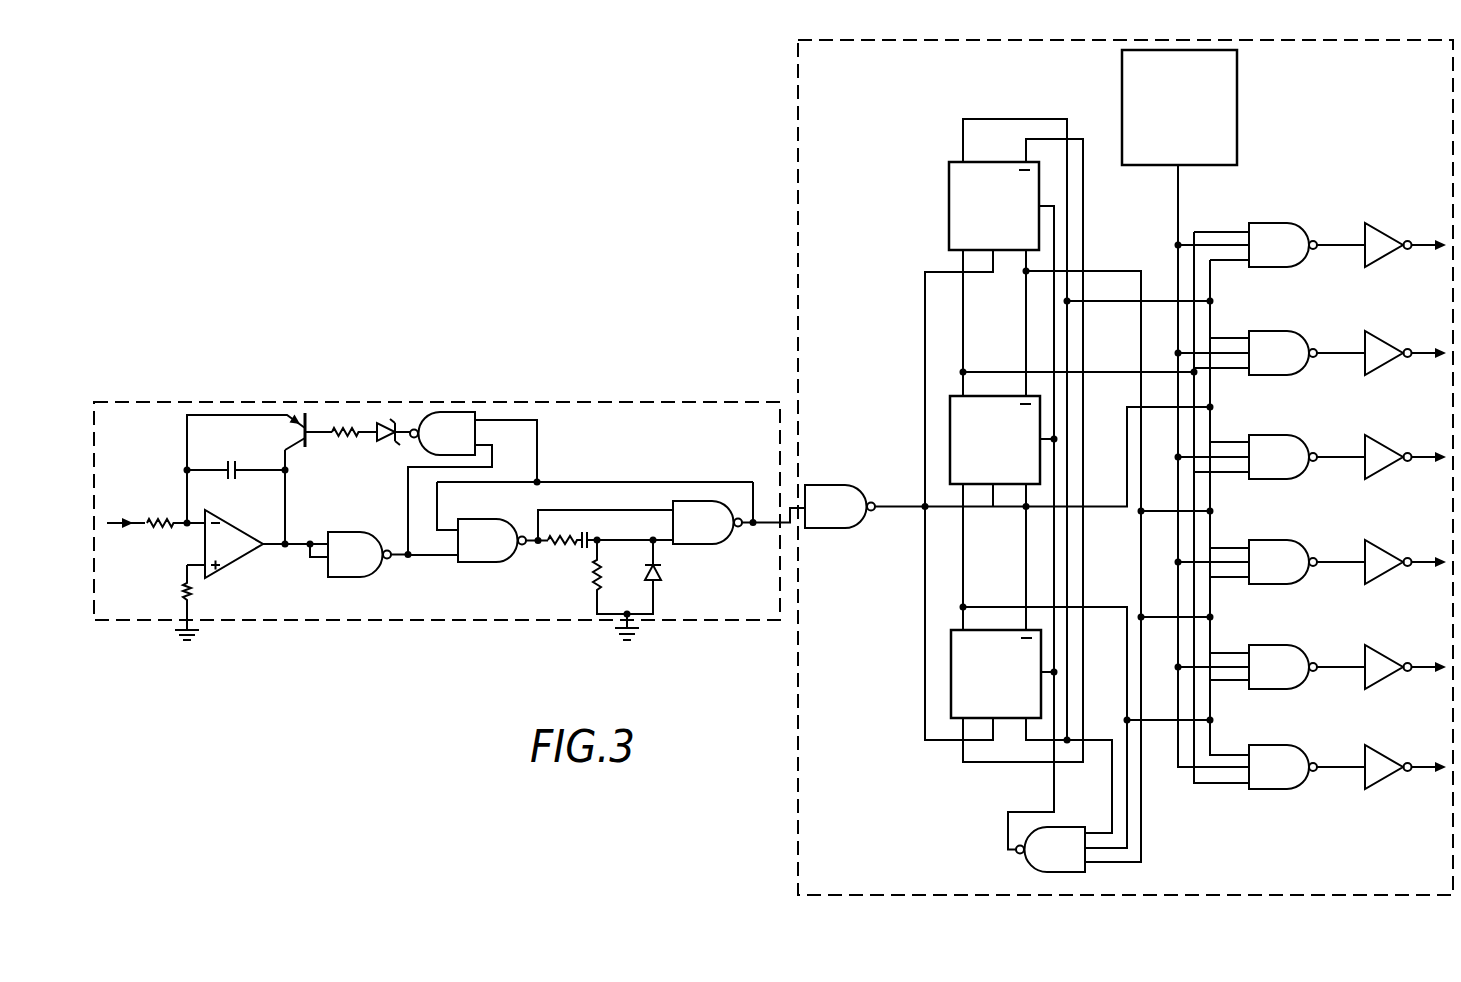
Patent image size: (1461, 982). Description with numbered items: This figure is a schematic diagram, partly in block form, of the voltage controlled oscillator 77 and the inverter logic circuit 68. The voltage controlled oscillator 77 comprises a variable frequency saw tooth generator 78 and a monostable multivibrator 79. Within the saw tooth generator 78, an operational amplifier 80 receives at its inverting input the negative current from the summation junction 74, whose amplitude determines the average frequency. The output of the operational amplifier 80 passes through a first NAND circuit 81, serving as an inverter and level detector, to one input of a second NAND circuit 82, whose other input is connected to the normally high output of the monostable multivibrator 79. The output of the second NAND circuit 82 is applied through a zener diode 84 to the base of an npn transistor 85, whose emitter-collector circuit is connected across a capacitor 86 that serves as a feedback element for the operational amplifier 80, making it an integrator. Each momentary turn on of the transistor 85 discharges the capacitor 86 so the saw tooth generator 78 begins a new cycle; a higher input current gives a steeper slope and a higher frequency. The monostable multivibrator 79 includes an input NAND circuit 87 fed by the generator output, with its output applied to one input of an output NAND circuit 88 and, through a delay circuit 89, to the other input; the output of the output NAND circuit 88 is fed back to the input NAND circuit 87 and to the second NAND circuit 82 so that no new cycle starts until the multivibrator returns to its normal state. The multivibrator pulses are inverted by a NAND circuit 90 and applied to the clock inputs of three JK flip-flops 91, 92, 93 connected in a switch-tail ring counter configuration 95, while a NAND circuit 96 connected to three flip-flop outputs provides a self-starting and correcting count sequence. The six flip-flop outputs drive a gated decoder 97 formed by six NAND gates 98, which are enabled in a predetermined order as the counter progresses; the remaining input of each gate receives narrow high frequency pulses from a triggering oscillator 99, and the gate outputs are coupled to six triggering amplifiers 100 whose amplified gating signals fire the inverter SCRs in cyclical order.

The inverter logic circuit 68 is at (790, 134).
The summation junction 74 is at (140, 562).
The voltage controlled oscillator 77 is at (573, 396).
The variable frequency saw tooth generator 78 is at (354, 502).
The monostable multivibrator 79 is at (654, 504).
The operational amplifier 80 is at (228, 556).
The first NAND circuit 81 is at (350, 578).
The second NAND circuit 82 is at (442, 410).
The zener diode 84 is at (381, 420).
The npn transistor 85 is at (292, 408).
The capacitor 86 is at (238, 430).
The input NAND circuit 87 is at (473, 563).
The output NAND circuit 88 is at (698, 546).
The delay circuit 89 is at (580, 556).
The NAND circuit 90 is at (820, 490).
The JK flip-flop 91 is at (949, 206).
The JK flip-flop 92 is at (950, 435).
The JK flip-flop 93 is at (955, 684).
The switch-tail ring counter configuration 95 is at (995, 110).
The NAND circuit 96 is at (1033, 852).
The gated decoder 97 is at (1283, 203).
The NAND gate 98 is at (1291, 237).
The triggering oscillator 99 is at (1230, 148).
The triggering amplifier 100 is at (1382, 238).